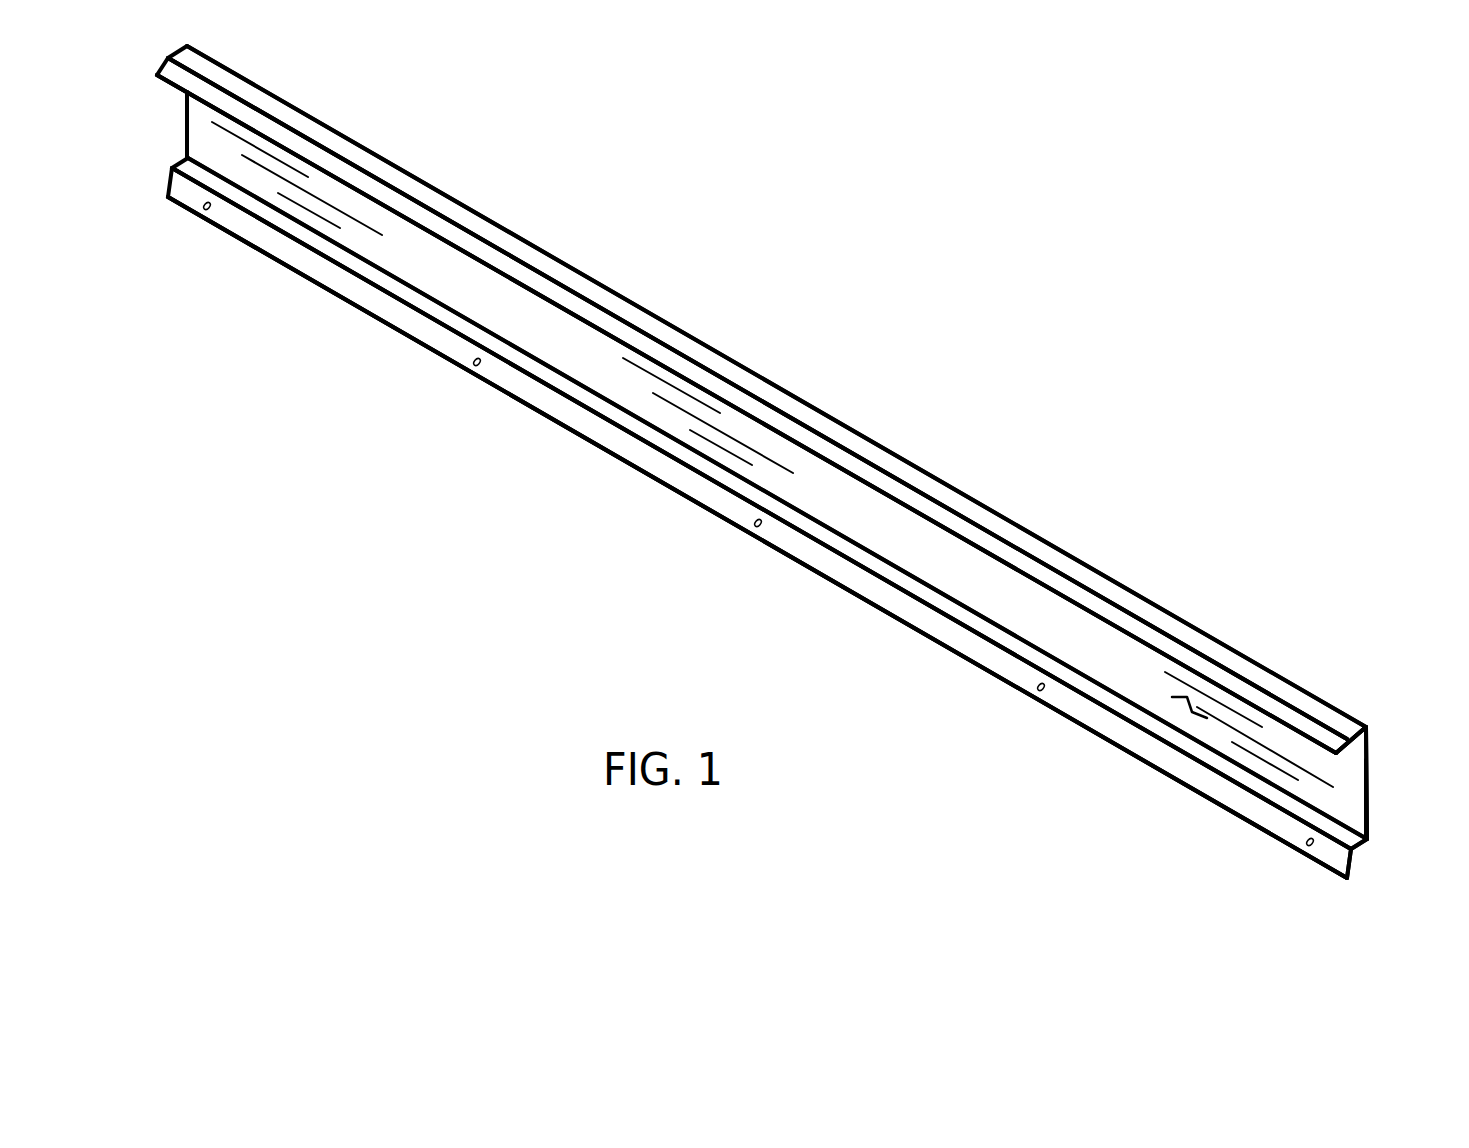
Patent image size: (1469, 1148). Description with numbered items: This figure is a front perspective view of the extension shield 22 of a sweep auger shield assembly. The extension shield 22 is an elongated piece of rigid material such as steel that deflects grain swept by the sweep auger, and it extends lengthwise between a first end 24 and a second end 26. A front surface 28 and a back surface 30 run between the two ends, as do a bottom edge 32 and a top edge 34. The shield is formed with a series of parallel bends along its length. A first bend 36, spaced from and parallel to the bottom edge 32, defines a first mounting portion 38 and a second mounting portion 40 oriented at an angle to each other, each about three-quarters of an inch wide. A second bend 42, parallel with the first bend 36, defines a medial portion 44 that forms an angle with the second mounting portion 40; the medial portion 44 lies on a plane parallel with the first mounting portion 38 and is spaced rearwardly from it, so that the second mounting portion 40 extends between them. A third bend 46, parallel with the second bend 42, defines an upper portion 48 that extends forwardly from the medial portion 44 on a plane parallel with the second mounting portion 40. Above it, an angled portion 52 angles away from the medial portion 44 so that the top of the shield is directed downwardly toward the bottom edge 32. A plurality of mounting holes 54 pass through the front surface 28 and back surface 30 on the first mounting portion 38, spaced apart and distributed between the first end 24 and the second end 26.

The extension shield 22 is at (992, 477).
The first end 24 is at (186, 125).
The second end 26 is at (1367, 803).
The front surface 28 is at (1188, 712).
The back surface 30 is at (1367, 763).
The bottom edge 32 is at (1328, 868).
The top edge 34 is at (1308, 738).
The first bend 36 is at (1097, 705).
The first mounting portion 38 is at (962, 639).
The second mounting portion 40 is at (915, 597).
The second bend 42 is at (1367, 838).
The medial portion 44 is at (1352, 790).
The third bend 46 is at (1367, 728).
The upper portion 48 is at (1228, 660).
The angled portion 52 is at (845, 457).
The mounting holes 54 is at (206, 212).